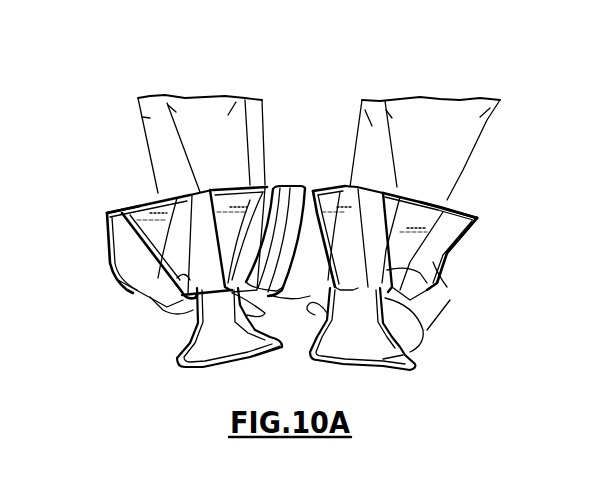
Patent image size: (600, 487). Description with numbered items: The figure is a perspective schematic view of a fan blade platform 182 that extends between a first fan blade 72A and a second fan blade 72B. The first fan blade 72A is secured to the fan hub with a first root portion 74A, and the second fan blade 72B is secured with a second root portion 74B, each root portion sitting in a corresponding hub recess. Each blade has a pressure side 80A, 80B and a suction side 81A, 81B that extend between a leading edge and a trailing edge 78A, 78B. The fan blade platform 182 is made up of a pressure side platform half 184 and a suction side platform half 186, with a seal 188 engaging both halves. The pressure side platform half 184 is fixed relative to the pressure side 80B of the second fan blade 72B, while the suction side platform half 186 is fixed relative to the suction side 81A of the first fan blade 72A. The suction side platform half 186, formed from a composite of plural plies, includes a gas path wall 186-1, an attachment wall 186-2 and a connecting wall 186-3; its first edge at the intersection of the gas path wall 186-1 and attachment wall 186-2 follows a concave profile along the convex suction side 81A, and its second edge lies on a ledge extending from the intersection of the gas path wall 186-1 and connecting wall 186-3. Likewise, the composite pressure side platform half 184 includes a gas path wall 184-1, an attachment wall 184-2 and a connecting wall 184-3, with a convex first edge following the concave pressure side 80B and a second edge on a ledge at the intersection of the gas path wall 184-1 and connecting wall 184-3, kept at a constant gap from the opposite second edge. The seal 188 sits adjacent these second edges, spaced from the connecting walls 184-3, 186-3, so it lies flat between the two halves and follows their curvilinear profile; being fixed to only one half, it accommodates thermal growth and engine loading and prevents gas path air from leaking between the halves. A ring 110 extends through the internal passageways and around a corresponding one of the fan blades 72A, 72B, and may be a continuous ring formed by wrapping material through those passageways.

The second fan blade 72B is at (184, 97).
The trailing edge 78B is at (173, 110).
The pressure side 80B is at (248, 63).
The suction side 81B is at (142, 117).
The first fan blade 72A is at (462, 104).
The trailing edge 78A is at (392, 118).
The pressure side 80A is at (481, 117).
The suction side 81A is at (368, 115).
The fan blade platform 182 is at (311, 136).
The pressure side platform half 184 is at (256, 118).
The gas path wall 184-1 is at (443, 203).
The attachment wall 184-2 is at (430, 320).
The connecting wall 184-3 is at (453, 237).
The suction side platform half 186 is at (153, 193).
The gas path wall 186-1 is at (128, 208).
The attachment wall 186-2 is at (185, 310).
The connecting wall 186-3 is at (150, 257).
The seal 188 is at (302, 185).
The ring 110 is at (177, 278).
The second root portion 74B is at (213, 350).
The first root portion 74A is at (352, 350).